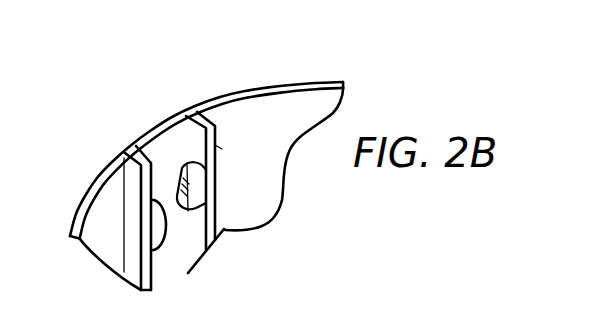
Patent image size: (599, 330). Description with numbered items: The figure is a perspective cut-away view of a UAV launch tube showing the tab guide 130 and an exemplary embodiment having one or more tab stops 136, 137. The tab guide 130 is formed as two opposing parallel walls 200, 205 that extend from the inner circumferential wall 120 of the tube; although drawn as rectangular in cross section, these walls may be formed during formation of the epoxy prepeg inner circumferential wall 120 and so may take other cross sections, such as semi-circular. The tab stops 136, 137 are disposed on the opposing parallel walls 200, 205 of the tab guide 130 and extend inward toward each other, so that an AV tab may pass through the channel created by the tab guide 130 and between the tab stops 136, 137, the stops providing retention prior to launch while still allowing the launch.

The inner circumferential wall 120 is at (272, 195).
The tab guide 130 is at (155, 267).
The tab stop 136 is at (153, 222).
The tab stop 137 is at (200, 190).
The opposing parallel wall 200 is at (220, 148).
The opposing parallel wall 205 is at (133, 255).